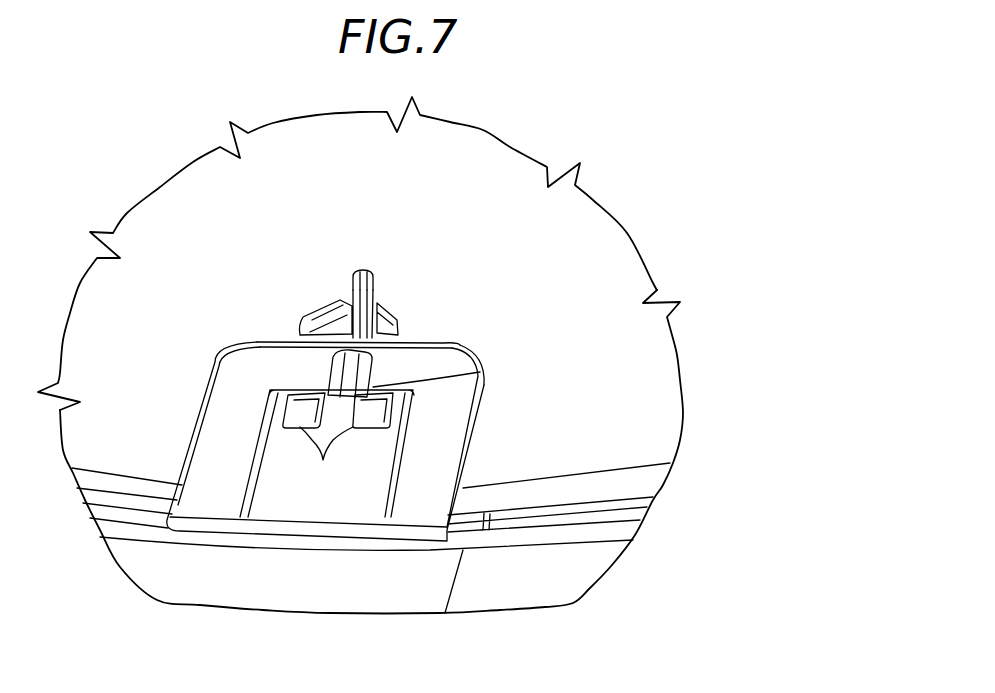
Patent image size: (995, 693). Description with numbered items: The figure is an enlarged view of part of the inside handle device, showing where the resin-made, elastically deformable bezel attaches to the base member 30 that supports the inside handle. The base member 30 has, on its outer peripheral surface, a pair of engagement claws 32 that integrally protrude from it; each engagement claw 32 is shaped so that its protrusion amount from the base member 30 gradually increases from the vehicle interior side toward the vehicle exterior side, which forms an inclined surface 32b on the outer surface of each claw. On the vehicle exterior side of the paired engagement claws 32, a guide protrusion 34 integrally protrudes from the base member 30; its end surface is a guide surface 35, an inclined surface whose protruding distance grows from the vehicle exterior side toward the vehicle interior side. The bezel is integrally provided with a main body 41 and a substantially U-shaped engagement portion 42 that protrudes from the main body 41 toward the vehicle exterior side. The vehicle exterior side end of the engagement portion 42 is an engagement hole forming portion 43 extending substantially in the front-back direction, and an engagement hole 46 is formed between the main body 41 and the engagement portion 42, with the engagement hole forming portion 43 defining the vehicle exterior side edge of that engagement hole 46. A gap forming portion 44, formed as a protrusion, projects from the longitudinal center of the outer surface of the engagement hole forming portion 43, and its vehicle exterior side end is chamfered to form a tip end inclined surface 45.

The base member 30 is at (661, 377).
The main body 41 is at (580, 588).
The engagement hole forming portion 43 is at (297, 367).
The tip end inclined surface 45 is at (412, 350).
The gap forming portion 44 is at (380, 367).
The engagement claw 32 is at (286, 414).
The inclined surface 32b is at (326, 461).
The guide surface 35 is at (380, 293).
The guide protrusion 34 is at (366, 278).
The engagement hole 46 is at (257, 455).
The engagement portion 42 is at (457, 467).